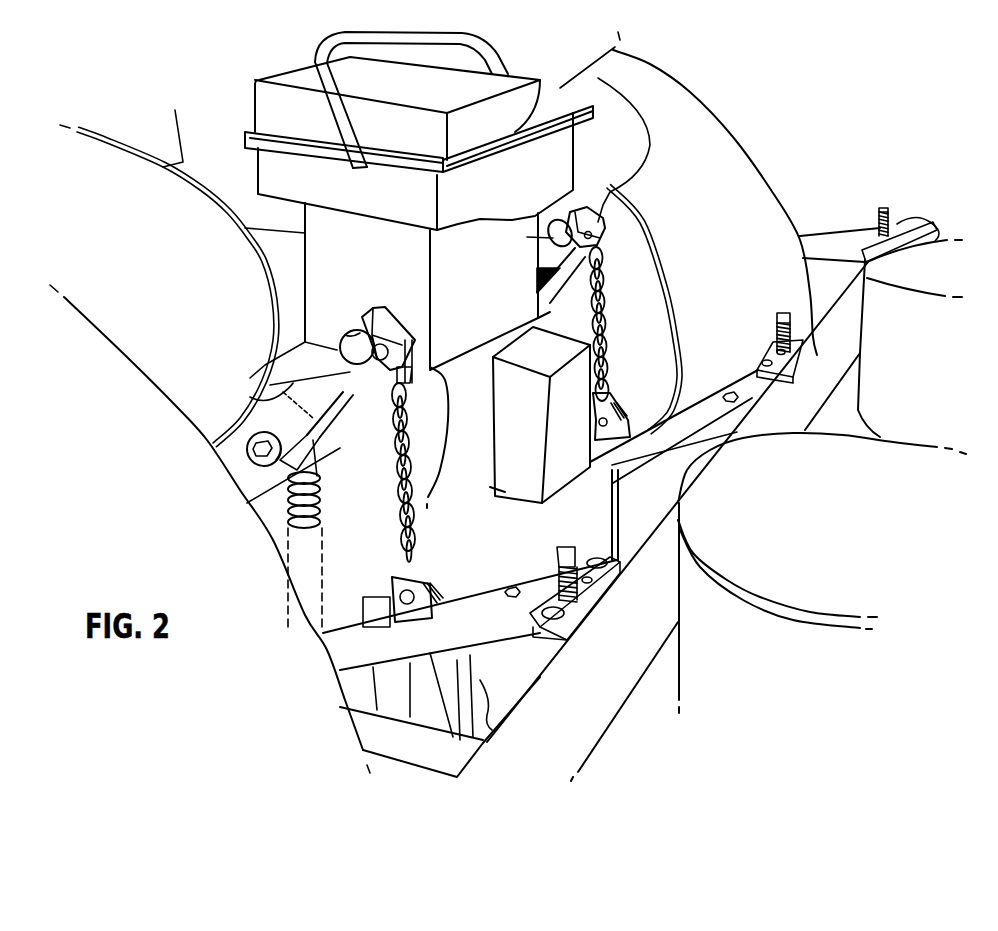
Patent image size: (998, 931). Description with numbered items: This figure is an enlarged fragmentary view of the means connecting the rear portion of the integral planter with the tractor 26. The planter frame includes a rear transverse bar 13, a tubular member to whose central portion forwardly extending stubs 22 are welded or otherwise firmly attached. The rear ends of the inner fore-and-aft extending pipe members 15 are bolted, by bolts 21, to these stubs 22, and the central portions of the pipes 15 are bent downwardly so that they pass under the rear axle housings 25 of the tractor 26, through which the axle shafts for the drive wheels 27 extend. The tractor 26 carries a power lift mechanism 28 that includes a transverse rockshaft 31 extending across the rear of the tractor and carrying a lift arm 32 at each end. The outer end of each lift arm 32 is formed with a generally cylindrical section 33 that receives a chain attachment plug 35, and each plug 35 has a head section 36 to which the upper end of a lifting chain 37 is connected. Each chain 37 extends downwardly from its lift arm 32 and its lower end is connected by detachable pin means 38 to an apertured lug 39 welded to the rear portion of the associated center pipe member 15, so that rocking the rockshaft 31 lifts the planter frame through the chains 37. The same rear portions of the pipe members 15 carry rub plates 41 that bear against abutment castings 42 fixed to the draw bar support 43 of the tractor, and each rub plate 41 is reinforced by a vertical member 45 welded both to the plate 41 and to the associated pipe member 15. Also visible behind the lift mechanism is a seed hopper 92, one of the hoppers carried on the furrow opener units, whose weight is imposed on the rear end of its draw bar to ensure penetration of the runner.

The rear transverse bar 13 is at (633, 680).
The inner fore-and-aft extending bars 15 is at (502, 625).
The bolts 21 is at (513, 587).
The forwardly extending stubs 22 is at (747, 405).
The rear axle housings 25 is at (262, 506).
The tractor 26 is at (690, 80).
The drive wheels 27 is at (108, 350).
The power lift mechanism 28 is at (476, 346).
The rockshaft 31 is at (256, 451).
The lift arm 32 is at (340, 418).
The cylindrical section 33 is at (343, 340).
The chain attachment plug 35 is at (376, 308).
The head section 36 is at (393, 322).
The lifting chain 37 is at (405, 436).
The detachable pin means 38 is at (403, 593).
The apertured lugs 39 is at (433, 597).
The rub plates 41 is at (375, 600).
The abutment castings 42 is at (497, 717).
The draw bar support 43 is at (357, 680).
The vertical members 45 is at (447, 690).
The seed hopper 92 is at (862, 371).